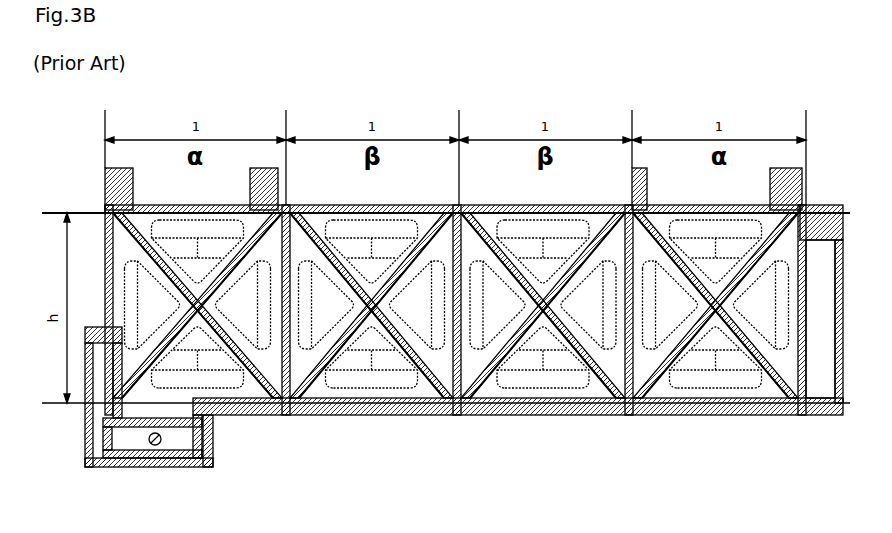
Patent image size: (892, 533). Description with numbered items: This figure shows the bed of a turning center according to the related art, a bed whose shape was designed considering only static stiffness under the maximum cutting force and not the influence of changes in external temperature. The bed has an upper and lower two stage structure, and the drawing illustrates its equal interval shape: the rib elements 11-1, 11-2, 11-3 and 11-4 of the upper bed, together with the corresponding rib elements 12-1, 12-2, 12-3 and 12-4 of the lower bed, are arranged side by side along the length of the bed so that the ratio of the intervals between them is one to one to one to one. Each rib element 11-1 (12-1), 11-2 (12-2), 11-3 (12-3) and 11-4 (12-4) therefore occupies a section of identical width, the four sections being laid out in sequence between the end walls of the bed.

The rib element 11-1 is at (255, 392).
The rib element 11-2 is at (418, 392).
The rib element 11-3 is at (598, 392).
The rib element 11-4 is at (760, 392).
The rib element 12-1 is at (197, 356).
The rib element 12-2 is at (371, 356).
The rib element 12-3 is at (543, 356).
The rib element 12-4 is at (715, 356).